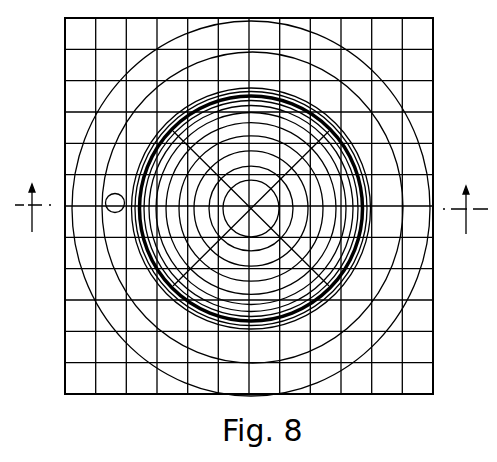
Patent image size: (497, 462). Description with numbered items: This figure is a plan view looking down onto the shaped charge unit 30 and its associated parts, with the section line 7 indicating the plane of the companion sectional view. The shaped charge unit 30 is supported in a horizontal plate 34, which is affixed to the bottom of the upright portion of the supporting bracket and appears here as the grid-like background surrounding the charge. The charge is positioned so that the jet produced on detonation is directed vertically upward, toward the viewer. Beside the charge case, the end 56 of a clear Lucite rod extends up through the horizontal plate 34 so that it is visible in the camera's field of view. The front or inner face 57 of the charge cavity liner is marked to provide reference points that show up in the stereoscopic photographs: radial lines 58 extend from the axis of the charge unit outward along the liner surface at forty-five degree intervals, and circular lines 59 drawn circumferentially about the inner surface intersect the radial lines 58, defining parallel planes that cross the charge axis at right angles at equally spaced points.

The section line 7- 7 is at (248, 209).
The shaped charge unit 30 is at (355, 262).
The horizontal plate 34 is at (433, 380).
The end of Lucite rod 56 is at (99, 195).
The front or inner face of the charge cavity liner 57 is at (337, 200).
The radial lines 58 is at (323, 153).
The circular lines 59 is at (338, 285).